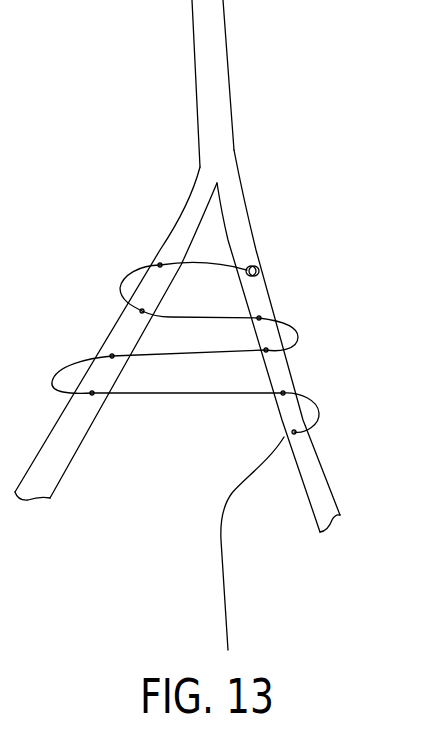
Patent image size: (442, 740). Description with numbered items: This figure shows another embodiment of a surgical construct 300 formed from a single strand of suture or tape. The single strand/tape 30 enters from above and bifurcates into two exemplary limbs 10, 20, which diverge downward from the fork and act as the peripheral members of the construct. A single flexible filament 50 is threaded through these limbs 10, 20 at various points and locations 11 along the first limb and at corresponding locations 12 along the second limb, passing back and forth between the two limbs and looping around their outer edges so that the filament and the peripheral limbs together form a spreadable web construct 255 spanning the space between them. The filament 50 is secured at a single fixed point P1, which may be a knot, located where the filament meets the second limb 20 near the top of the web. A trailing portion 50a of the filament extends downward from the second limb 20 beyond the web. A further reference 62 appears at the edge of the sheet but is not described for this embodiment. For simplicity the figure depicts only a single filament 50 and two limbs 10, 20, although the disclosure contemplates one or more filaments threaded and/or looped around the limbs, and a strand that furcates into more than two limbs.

The single strand/tape 30 is at (208, 50).
The limb 10 is at (178, 217).
The limb 20 is at (236, 206).
The surgical construct 300 is at (293, 130).
The partial reference (cut off at sheet edge) 62 is at (9, 150).
The flexible filament 50 is at (248, 318).
The spreadable web construct 255 is at (170, 367).
The points and locations 11 is at (160, 265).
The anchor points in second branch 12 is at (268, 350).
The fixed point P1 is at (259, 271).
The stent tether / tail 50a is at (220, 556).